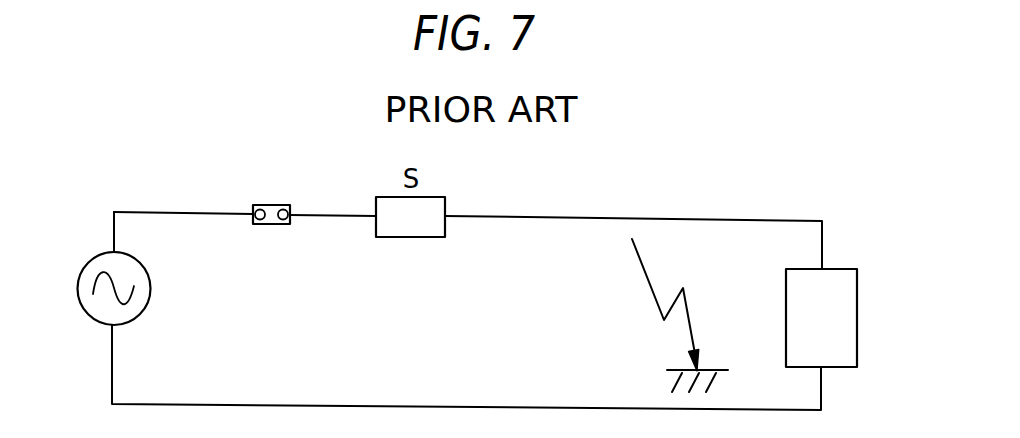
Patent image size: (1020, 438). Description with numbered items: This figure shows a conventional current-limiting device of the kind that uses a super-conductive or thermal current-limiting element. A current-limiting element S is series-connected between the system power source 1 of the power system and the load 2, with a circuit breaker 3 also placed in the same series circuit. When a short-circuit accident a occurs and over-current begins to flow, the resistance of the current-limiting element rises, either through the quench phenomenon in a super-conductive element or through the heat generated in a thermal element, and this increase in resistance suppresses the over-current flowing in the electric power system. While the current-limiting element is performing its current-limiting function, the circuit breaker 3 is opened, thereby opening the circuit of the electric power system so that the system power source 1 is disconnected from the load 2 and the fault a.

The system power source 1 is at (78, 286).
The load 2 is at (858, 318).
The circuit breaker 3 is at (269, 164).
The short-circuit accident a is at (680, 315).